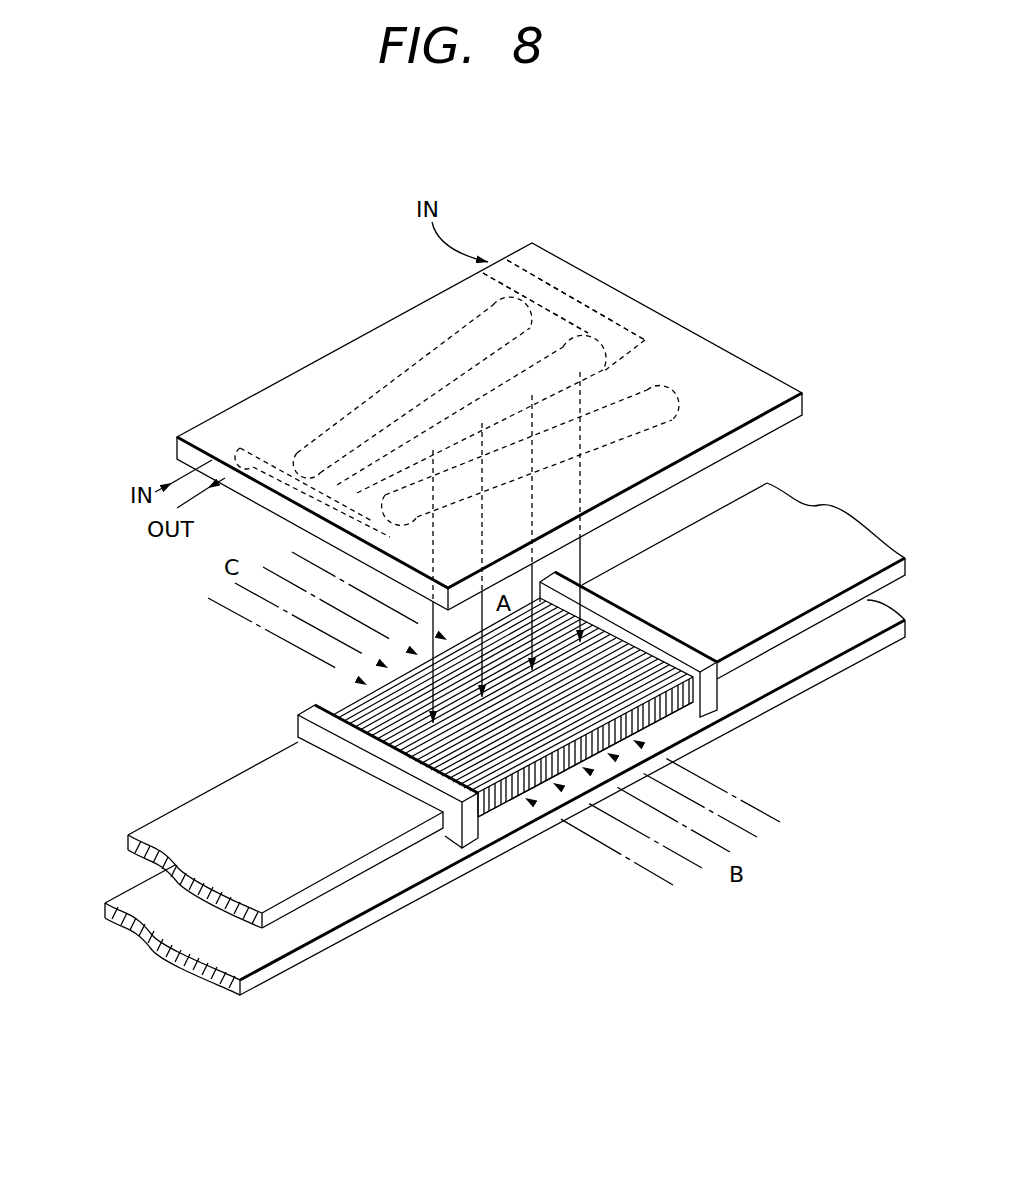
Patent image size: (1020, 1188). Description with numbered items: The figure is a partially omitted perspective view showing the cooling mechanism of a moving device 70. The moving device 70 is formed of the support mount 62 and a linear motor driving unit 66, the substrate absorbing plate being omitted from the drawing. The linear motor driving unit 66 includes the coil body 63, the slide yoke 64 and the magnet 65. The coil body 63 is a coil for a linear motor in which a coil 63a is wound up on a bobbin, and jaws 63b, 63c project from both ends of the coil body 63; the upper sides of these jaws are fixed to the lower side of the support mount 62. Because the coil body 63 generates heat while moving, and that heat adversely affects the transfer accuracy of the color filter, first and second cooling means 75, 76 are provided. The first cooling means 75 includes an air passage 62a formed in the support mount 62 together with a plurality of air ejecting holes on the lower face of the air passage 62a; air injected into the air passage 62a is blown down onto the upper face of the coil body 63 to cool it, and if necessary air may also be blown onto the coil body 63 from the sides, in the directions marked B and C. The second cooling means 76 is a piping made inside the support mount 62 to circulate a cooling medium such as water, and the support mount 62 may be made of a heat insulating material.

The support mount 62 is at (489, 403).
The air passage 62a is at (593, 307).
The first cooling means 75 is at (554, 282).
The second cooling means 76 is at (247, 438).
The moving device 70 is at (230, 674).
The slide yoke 64 is at (805, 518).
The magnet 65 is at (387, 890).
The linear motor driving unit 66 is at (93, 832).
The coil body 63 is at (595, 739).
The coil 63a is at (683, 712).
The jaw 63b is at (458, 797).
The jaw 63c is at (677, 648).